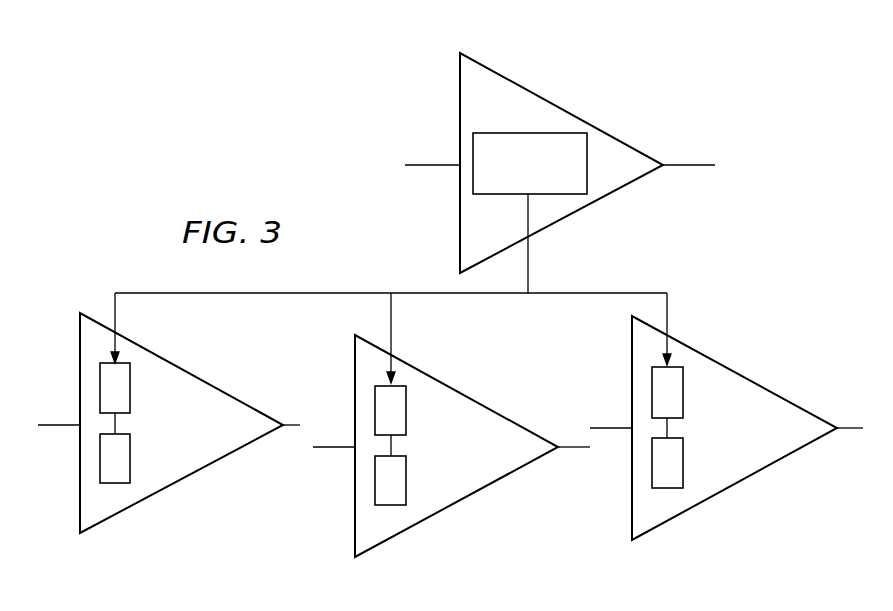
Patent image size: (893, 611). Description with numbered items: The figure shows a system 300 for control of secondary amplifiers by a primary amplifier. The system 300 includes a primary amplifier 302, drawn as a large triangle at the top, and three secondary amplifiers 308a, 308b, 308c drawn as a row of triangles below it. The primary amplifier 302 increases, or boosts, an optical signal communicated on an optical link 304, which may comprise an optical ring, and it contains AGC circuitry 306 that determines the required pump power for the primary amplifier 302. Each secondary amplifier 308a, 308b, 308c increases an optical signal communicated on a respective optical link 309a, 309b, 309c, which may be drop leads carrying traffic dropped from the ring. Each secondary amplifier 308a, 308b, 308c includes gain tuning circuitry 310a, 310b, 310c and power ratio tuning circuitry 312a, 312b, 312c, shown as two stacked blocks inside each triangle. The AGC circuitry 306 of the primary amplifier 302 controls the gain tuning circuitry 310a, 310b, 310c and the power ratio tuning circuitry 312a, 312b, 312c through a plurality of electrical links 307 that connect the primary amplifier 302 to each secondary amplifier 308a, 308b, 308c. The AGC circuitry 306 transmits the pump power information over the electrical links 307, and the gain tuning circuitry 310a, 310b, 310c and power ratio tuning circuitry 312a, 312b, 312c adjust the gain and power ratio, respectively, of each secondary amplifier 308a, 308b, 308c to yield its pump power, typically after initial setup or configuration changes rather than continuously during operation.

The system 300 is at (742, 130).
The primary amplifier 302 is at (565, 110).
The optical link 304 is at (434, 158).
The AGC circuitry 306 is at (500, 132).
The electrical links 307 is at (530, 255).
The secondary amplifier 308a is at (183, 479).
The secondary amplifier 308b is at (458, 501).
The secondary amplifier 308c is at (735, 484).
The optical link 309a is at (58, 427).
The optical link 309b is at (333, 449).
The optical link 309c is at (610, 426).
The gain tuning circuitry 310a is at (130, 388).
The gain tuning circuitry 310b is at (406, 412).
The gain tuning circuitry 310c is at (683, 393).
The power ratio tuning circuitry 312a is at (130, 461).
The power ratio tuning circuitry 312b is at (406, 481).
The power ratio tuning circuitry 312c is at (683, 463).